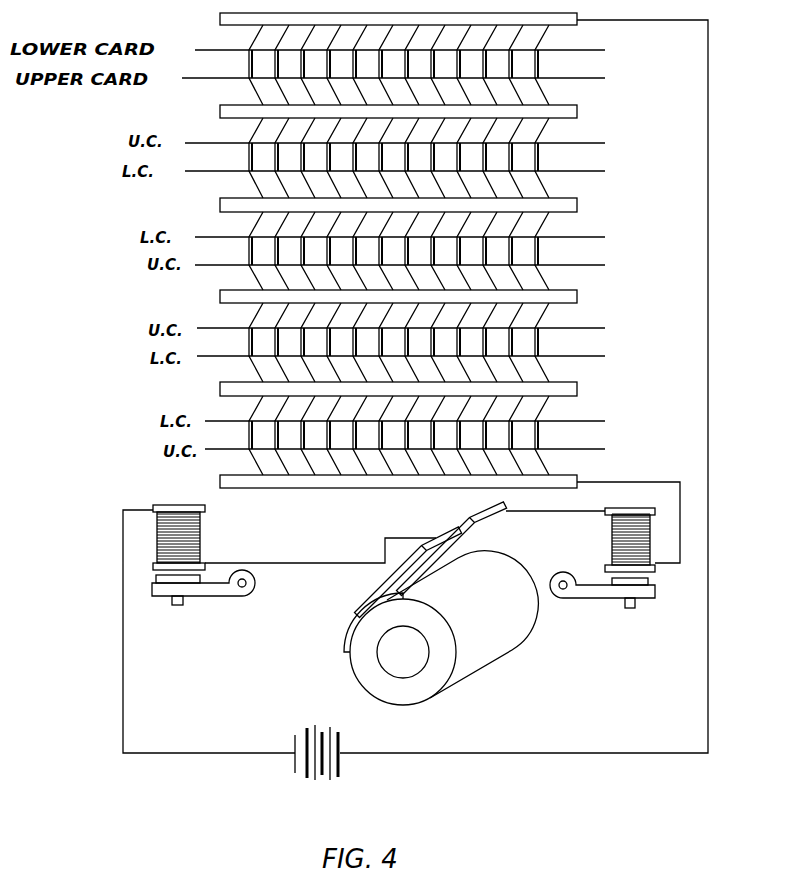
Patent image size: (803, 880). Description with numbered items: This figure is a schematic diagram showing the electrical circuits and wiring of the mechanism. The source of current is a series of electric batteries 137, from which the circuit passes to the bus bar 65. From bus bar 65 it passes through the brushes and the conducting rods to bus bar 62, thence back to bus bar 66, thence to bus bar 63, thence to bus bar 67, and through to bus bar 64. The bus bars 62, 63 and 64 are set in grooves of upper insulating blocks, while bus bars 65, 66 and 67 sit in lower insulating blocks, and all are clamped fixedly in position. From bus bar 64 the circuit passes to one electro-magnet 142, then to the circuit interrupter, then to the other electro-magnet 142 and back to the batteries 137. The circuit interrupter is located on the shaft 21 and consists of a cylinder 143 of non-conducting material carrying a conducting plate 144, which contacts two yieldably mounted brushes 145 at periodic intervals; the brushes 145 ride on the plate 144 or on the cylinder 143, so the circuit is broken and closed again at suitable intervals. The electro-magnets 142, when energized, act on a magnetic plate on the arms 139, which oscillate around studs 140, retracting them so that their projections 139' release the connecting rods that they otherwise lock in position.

The bus bar 65 is at (235, 17).
The bus bar 62 is at (230, 110).
The bus bar 66 is at (225, 203).
The bus bar 63 is at (220, 296).
The bus bar 67 is at (220, 388).
The bus bar 64 is at (225, 481).
The electro-magnet 142 is at (195, 518).
The arm 139 is at (403, 607).
The projection 139' is at (393, 644).
The stud 140 is at (262, 588).
The cylinder 143 is at (365, 683).
The shaft 21 is at (403, 652).
The conducting plate 144 is at (355, 633).
The brush 145 is at (473, 515).
The electric battery 137 is at (285, 762).